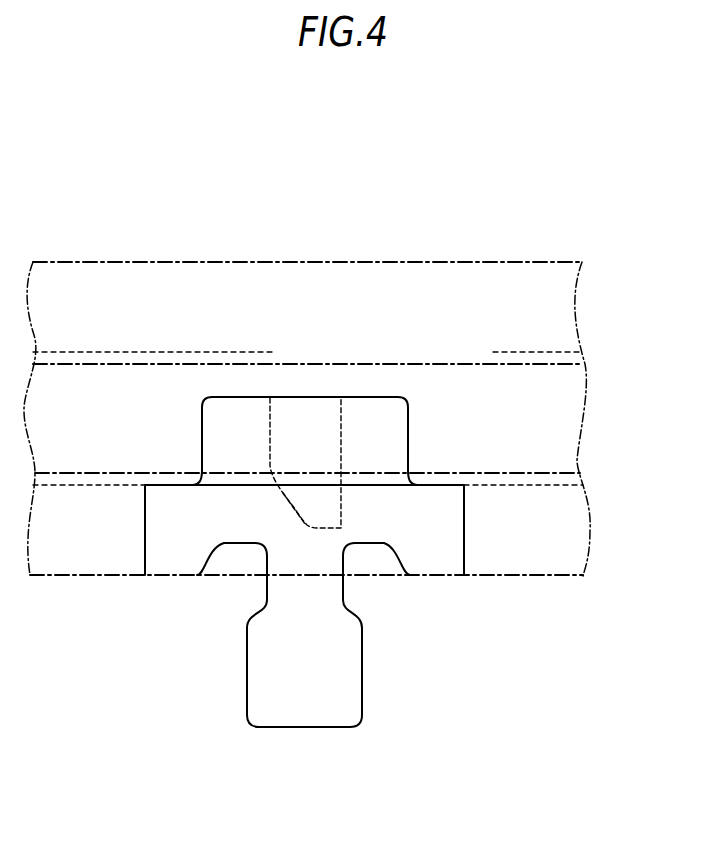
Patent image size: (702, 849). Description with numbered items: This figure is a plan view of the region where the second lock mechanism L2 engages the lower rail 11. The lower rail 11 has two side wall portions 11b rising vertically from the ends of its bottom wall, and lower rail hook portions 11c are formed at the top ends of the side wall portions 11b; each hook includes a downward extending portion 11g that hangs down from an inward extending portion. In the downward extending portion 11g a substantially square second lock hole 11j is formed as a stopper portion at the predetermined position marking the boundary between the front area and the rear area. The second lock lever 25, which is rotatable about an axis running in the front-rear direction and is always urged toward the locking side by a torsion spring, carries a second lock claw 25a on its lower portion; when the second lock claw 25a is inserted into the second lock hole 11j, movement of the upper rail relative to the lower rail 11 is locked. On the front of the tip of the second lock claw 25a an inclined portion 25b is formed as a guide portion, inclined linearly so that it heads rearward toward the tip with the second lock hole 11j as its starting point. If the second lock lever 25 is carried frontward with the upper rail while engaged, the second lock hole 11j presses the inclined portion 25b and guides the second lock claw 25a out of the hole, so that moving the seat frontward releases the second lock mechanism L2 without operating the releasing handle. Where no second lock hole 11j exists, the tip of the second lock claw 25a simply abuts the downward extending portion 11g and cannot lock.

The lower rail 11 is at (532, 577).
The side wall portion 11b is at (93, 262).
The lower rail hook portion 11c is at (307, 418).
The downward extending portion 11g is at (438, 365).
The second lock hole 11j is at (268, 468).
The second lock lever 25 is at (173, 563).
The second lock claw 25a is at (345, 421).
The inclined portion 25b is at (288, 501).
The second lock mechanism L2 is at (397, 608).